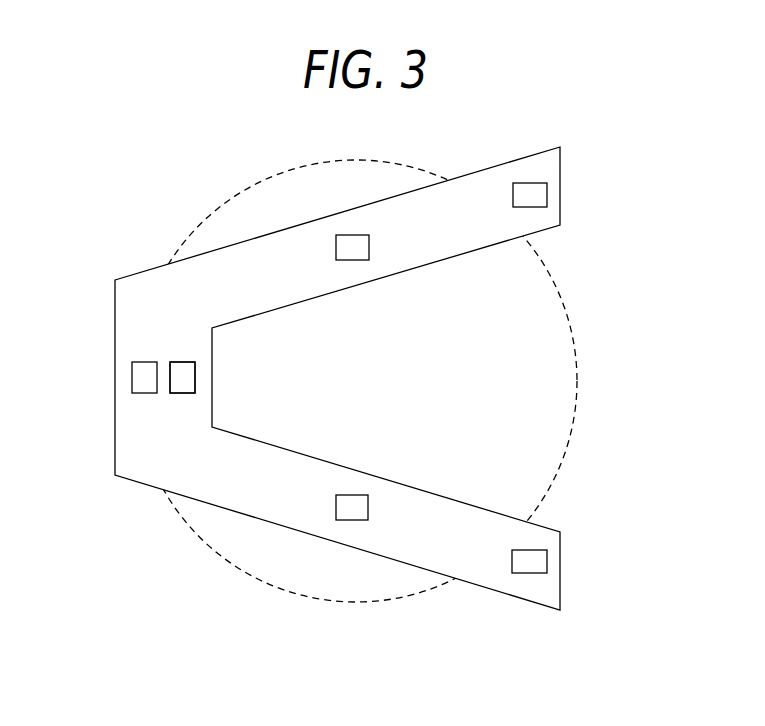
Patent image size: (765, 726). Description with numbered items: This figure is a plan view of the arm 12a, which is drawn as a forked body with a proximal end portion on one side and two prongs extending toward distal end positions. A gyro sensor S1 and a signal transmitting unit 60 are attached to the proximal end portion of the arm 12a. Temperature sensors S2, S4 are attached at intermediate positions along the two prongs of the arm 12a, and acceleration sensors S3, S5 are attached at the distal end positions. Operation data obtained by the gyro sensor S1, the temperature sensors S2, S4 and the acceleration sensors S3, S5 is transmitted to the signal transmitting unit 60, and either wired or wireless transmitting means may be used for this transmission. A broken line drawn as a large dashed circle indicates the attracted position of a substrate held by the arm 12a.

The arm 12a is at (560, 190).
The signal transmitting unit 60 is at (132, 378).
The gyro sensor S1 is at (195, 378).
The temperature sensor S2 is at (351, 243).
The acceleration sensor S3 is at (514, 196).
The temperature sensor S4 is at (352, 507).
The acceleration sensor S5 is at (514, 556).